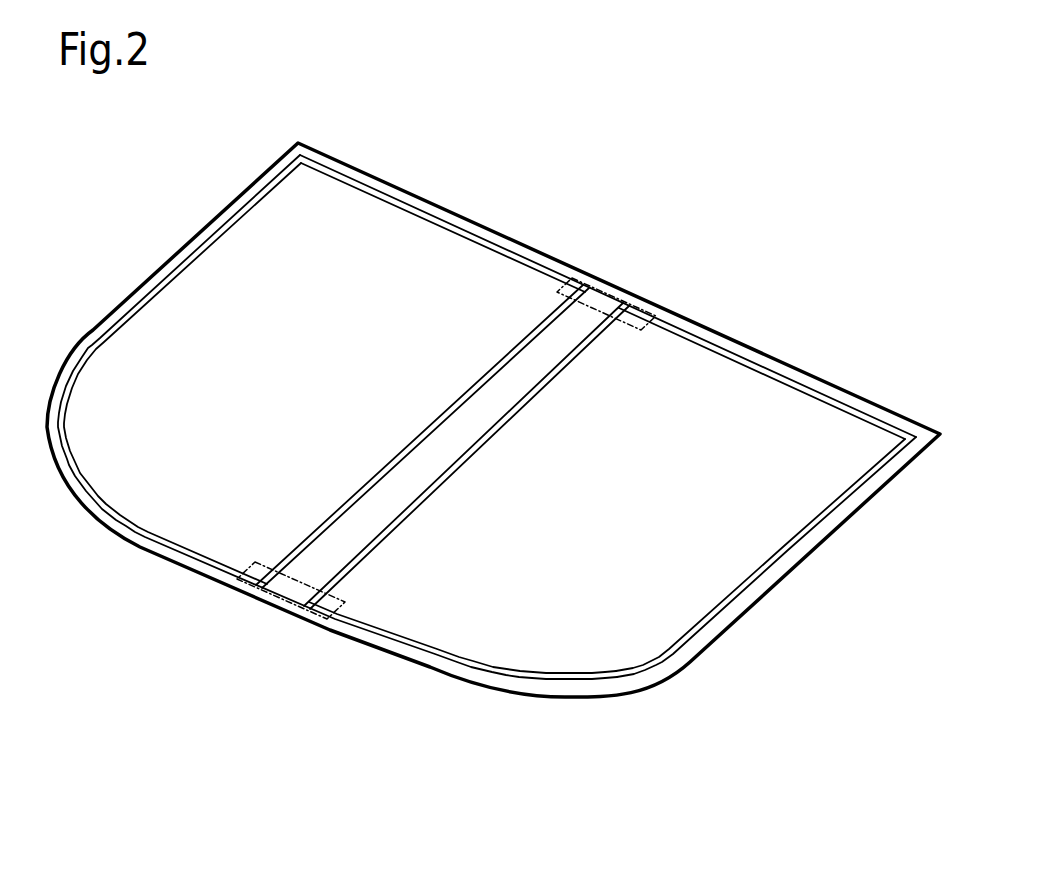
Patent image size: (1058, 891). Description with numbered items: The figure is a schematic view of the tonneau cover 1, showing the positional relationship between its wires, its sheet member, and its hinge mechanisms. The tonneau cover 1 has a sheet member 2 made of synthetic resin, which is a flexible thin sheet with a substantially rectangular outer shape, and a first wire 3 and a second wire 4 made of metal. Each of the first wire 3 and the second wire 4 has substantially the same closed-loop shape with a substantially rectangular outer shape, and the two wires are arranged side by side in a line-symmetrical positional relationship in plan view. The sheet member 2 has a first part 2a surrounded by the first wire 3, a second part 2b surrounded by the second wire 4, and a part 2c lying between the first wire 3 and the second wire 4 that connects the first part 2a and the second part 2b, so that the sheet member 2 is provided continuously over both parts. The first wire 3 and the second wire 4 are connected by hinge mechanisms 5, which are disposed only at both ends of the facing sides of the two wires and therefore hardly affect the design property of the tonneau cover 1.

The tonneau cover 1 is at (642, 155).
The sheet member 2 is at (282, 788).
The first part 2a is at (322, 435).
The second part 2b is at (437, 605).
The part 2c is at (418, 477).
The first wire 3 is at (481, 236).
The second wire 4 is at (882, 419).
The hinge mechanisms 5 is at (622, 272).